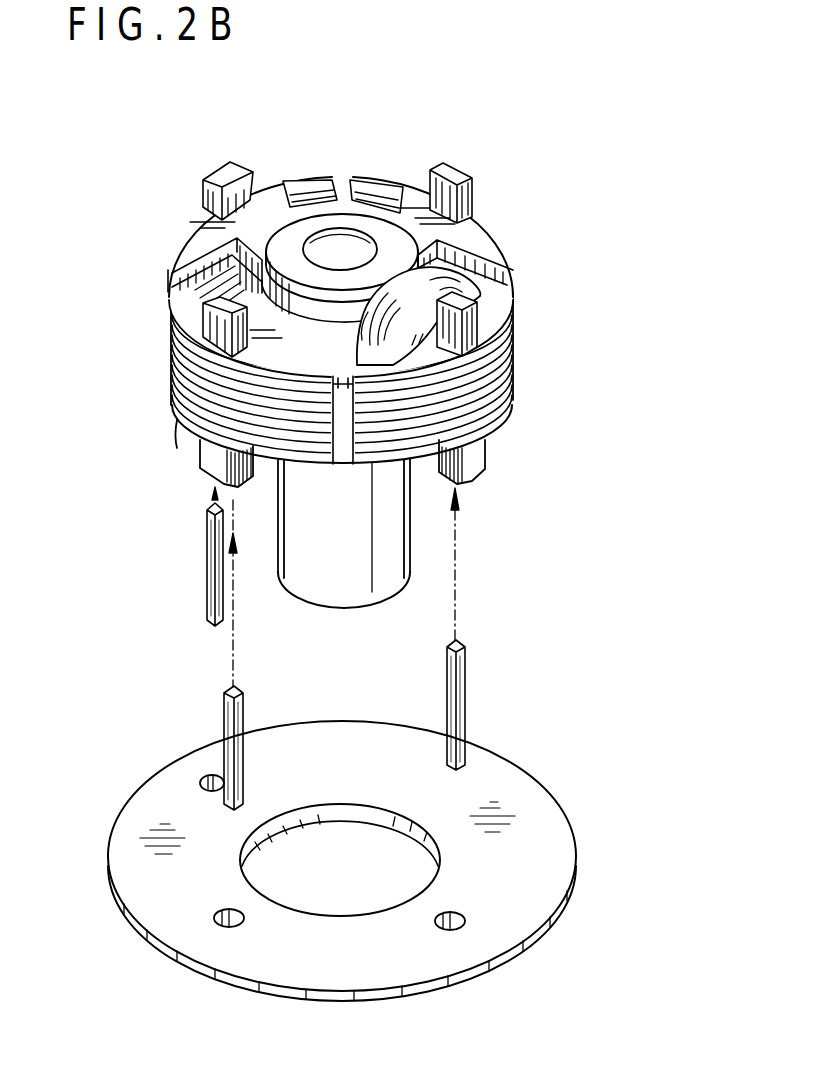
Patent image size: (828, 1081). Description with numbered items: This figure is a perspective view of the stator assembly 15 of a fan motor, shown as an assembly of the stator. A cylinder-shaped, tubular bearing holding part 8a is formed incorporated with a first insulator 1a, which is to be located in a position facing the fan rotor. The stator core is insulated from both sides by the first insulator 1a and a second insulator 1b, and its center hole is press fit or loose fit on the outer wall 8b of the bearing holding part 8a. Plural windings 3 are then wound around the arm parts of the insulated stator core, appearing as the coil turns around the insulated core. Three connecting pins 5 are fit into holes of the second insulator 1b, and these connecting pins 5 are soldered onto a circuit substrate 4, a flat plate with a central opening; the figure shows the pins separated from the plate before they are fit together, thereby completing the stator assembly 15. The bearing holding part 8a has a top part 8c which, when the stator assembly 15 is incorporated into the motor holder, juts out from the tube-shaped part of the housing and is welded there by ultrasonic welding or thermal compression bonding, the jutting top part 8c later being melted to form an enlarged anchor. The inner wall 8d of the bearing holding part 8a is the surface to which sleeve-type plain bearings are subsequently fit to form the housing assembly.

The first insulator 1a is at (293, 236).
The second insulator 1b is at (195, 437).
The windings 3 is at (460, 268).
The circuit substrate 4 is at (560, 856).
The connecting pins 5 is at (468, 693).
The bearing holding part 8a is at (298, 598).
The outer wall of the bearing holding part 8b is at (409, 540).
The top part of the bearing holding part 8c is at (341, 610).
The inner wall of the bearing holding part 8d is at (351, 250).
The stator assembly 15 is at (625, 240).